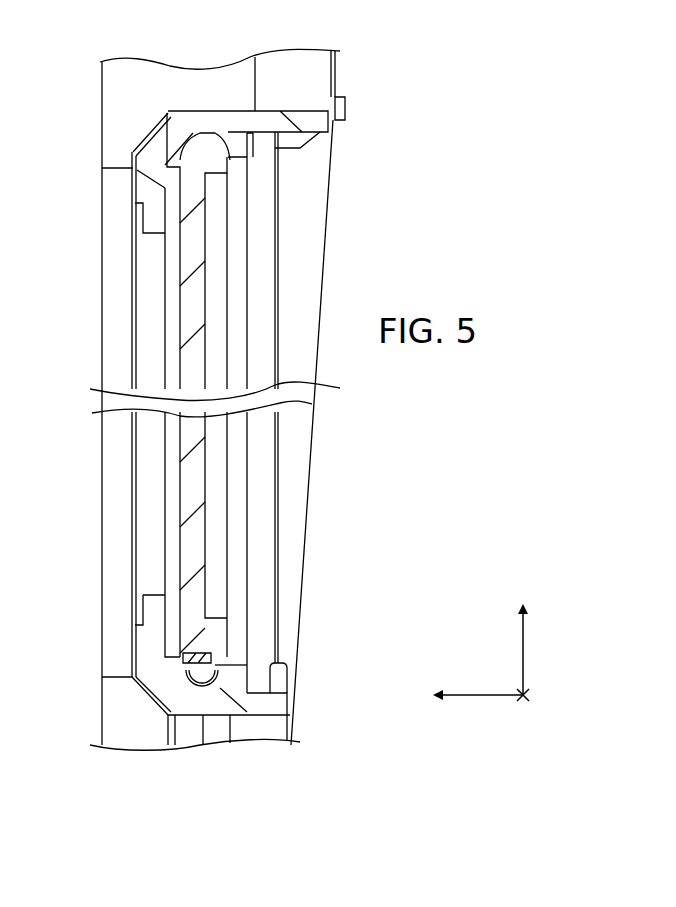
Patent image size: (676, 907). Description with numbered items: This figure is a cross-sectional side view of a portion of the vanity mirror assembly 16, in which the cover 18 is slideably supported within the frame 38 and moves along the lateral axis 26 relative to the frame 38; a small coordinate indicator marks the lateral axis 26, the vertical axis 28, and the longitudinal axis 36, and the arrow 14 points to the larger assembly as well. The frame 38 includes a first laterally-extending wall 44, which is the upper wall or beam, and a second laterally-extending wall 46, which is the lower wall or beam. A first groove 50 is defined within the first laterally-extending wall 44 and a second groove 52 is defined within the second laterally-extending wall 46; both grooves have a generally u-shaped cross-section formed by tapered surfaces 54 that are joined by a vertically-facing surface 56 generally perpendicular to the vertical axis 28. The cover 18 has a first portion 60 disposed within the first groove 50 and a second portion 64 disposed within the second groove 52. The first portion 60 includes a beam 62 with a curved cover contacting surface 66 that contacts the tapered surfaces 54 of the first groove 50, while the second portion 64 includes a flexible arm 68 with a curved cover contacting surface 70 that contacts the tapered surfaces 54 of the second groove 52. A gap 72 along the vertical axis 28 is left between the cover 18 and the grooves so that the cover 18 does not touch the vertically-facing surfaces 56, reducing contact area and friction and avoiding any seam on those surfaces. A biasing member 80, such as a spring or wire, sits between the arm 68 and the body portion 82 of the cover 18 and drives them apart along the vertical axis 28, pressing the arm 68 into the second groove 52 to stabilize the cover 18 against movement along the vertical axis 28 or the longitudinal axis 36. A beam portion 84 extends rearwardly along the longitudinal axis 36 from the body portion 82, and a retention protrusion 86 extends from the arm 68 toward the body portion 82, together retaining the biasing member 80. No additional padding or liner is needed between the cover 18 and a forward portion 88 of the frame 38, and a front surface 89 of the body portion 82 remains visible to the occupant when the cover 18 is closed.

The rack 14 is at (402, 128).
The vanity mirror assembly 16 is at (417, 166).
The cover 18 is at (193, 322).
The lateral axis 26 is at (528, 699).
The vertical axis 28 is at (523, 655).
The longitudinal axis 36 is at (483, 695).
The frame 38 is at (155, 602).
The first laterally-extending wall 44 is at (308, 125).
The second laterally-extending wall 46 is at (270, 707).
The first groove 50 is at (226, 130).
The second groove 52 is at (235, 706).
The tapered surfaces 54 is at (218, 140).
The vertically-facing surface 56 is at (204, 132).
The first portion 60 is at (216, 186).
The beam 62 is at (218, 158).
The second portion 64 is at (243, 664).
The curved cover contacting surface 66 is at (178, 166).
The arm 68 is at (187, 670).
The curved cover contacting surface 70 is at (212, 662).
The gap 72 is at (198, 133).
The biasing member 80 is at (200, 653).
The body portion 82 is at (193, 380).
The beam portion 84 is at (218, 625).
The retention protrusion 86 is at (205, 640).
The forward portion 88 is at (152, 213).
The front surface 89 is at (180, 483).